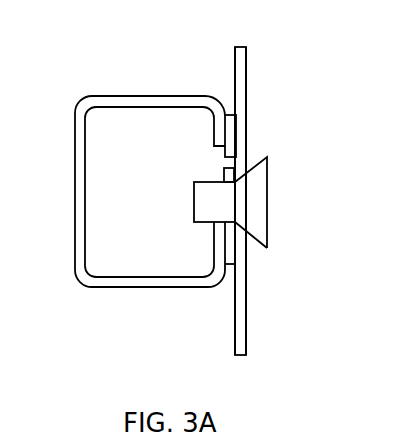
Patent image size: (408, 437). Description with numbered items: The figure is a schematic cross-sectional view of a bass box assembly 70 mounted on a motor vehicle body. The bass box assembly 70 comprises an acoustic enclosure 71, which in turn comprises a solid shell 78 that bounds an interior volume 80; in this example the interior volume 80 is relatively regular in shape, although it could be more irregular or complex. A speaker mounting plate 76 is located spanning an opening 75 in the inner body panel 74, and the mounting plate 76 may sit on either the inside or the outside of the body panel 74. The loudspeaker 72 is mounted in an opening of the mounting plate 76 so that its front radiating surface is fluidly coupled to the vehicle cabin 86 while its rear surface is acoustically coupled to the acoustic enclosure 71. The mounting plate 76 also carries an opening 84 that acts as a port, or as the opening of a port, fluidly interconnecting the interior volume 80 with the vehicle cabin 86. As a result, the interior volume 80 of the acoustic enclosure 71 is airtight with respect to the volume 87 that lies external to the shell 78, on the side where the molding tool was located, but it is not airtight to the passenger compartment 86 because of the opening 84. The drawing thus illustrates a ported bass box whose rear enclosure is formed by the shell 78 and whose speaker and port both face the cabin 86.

The bass box assembly 70 is at (278, 100).
The acoustic enclosure 71 is at (77, 68).
The loudspeaker 72 is at (283, 210).
The inner body panel 74 is at (248, 315).
The opening 75 is at (235, 237).
The speaker mounting plate 76 is at (225, 113).
The solid shell 78 is at (172, 288).
The interior volume 80 is at (103, 252).
The opening 84 is at (237, 152).
The vehicle cabin 86 is at (372, 243).
The volume 87 is at (220, 325).